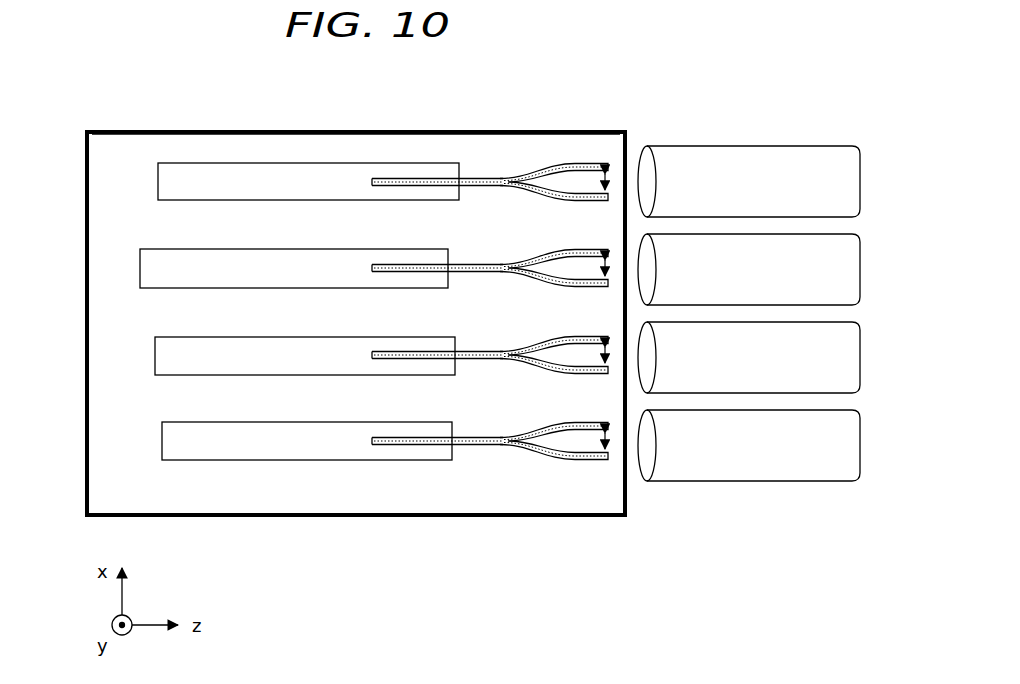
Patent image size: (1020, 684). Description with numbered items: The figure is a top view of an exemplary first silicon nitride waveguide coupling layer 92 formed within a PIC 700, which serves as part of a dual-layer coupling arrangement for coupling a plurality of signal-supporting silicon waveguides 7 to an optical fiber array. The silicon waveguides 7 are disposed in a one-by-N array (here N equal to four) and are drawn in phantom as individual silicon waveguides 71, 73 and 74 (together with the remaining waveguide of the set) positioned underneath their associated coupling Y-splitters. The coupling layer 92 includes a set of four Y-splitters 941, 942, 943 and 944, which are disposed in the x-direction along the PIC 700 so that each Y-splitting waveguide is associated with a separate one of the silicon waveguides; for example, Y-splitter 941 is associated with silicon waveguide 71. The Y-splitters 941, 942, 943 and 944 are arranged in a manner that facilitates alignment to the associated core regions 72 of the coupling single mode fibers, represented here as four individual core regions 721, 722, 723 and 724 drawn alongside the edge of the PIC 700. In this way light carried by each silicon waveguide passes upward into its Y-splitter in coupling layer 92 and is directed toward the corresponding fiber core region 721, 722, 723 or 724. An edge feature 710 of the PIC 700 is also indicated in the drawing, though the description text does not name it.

The signal-supporting waveguides 7 is at (106, 315).
The PIC 700 is at (195, 133).
The first silicon nitride waveguide coupling layer 92 is at (478, 147).
The output facet 710 is at (626, 148).
The silicon waveguide 74 is at (199, 194).
The silicon waveguide 73 is at (197, 283).
The silicon waveguide 71 is at (199, 455).
The Y-splitter 944 is at (487, 188).
The Y-splitter 943 is at (487, 274).
The Y-splitter 942 is at (487, 361).
The Y-splitter 941 is at (487, 447).
The core regions of coupling single mode fibers 72 is at (832, 125).
The core region 724 is at (858, 186).
The core region 723 is at (858, 274).
The core region 722 is at (858, 362).
The core region 721 is at (858, 450).